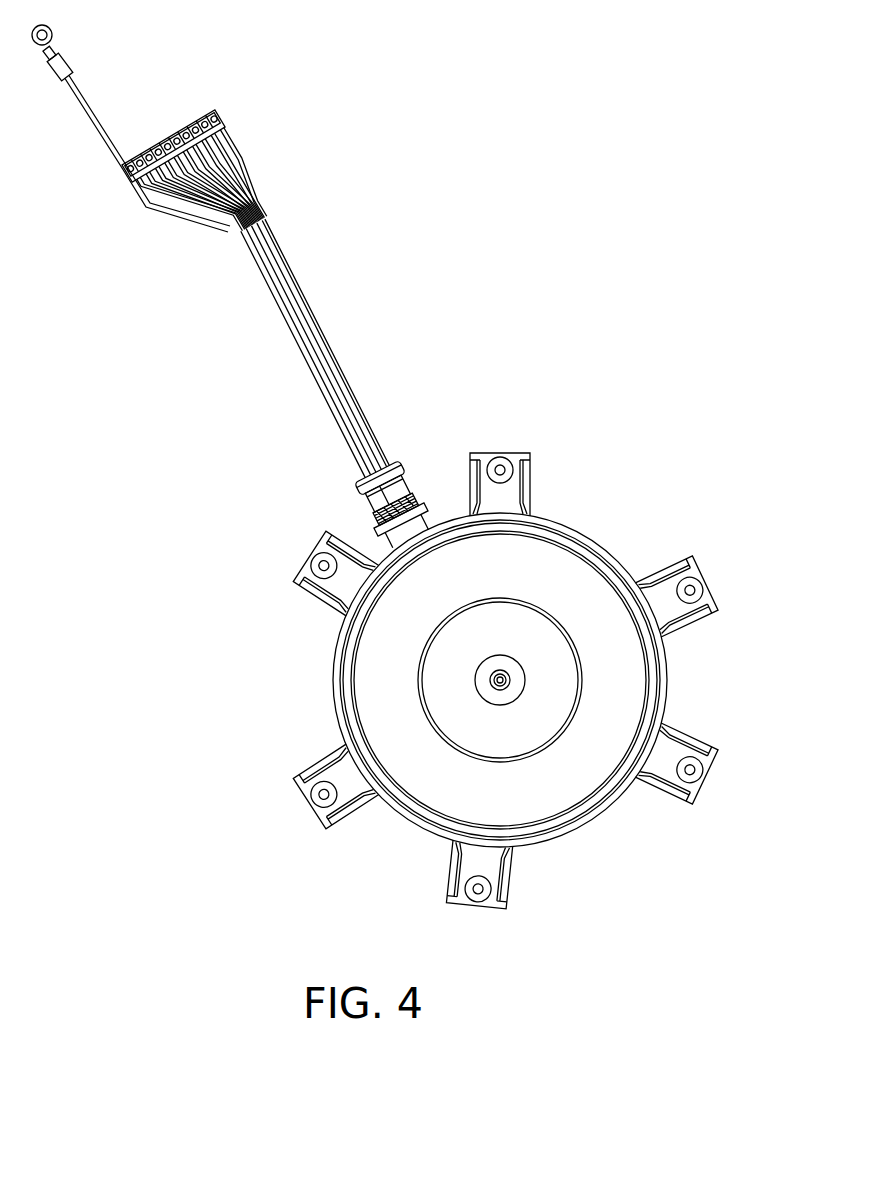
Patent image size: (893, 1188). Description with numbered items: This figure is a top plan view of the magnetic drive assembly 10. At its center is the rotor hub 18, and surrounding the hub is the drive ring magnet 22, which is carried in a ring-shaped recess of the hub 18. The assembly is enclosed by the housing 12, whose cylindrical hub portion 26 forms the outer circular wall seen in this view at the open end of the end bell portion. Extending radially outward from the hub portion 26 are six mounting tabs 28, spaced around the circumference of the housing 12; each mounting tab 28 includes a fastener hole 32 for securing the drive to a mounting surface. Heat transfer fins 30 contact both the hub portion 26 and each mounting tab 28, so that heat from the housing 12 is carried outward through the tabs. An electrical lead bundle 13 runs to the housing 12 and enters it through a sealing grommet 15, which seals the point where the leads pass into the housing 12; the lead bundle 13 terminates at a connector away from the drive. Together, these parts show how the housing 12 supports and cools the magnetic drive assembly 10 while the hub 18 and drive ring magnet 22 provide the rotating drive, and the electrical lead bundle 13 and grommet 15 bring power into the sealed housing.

The magnetic drive assembly 10 is at (521, 379).
The housing 12 is at (320, 679).
The electrical lead bundle 13 is at (305, 325).
The sealing grommet 15 is at (365, 500).
The hub 18 is at (486, 645).
The drive ring magnet 22 is at (473, 807).
The hub portion 26 is at (337, 720).
The mounting tab 28 is at (522, 455).
The heat transfer fin 30 is at (470, 478).
The fastener hole 32 is at (500, 470).